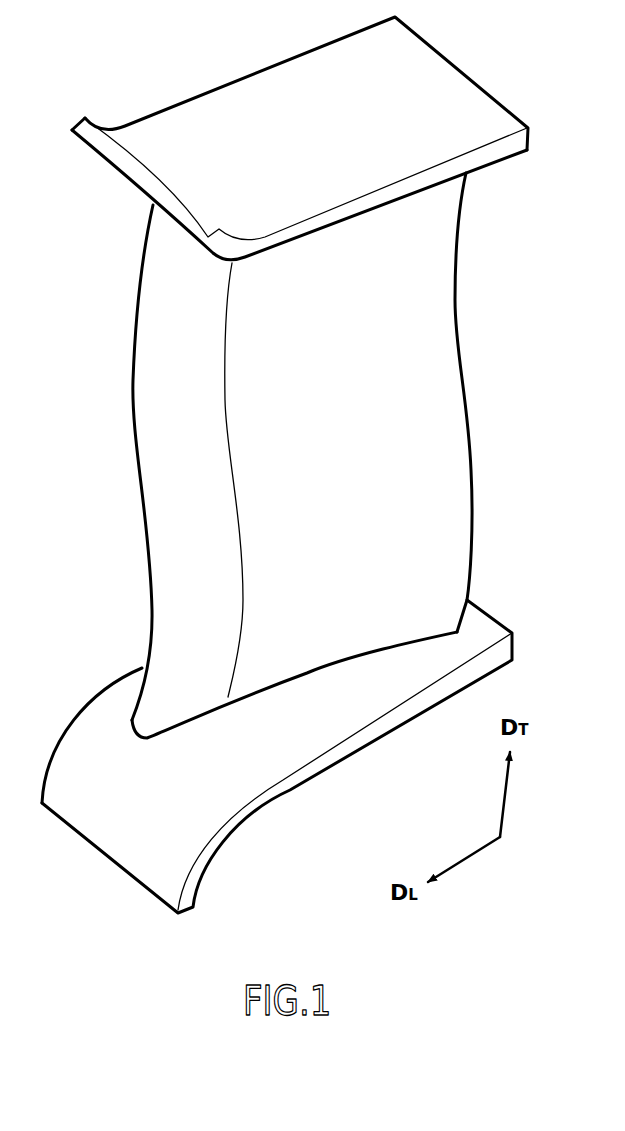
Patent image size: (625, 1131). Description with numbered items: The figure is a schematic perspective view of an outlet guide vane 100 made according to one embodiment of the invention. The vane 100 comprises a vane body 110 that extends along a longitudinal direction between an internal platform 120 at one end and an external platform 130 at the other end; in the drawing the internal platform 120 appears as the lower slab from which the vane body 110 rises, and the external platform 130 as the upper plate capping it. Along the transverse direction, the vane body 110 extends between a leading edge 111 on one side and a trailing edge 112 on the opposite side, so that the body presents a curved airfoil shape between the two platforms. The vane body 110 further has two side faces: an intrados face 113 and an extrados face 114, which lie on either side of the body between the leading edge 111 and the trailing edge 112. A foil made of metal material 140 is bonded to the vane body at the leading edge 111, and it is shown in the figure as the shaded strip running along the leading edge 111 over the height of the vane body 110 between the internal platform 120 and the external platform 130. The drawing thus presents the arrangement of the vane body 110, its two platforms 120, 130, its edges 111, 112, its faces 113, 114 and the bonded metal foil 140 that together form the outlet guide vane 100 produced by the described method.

The vane 100 is at (79, 68).
The vane body 110 is at (443, 410).
The leading edge 111 is at (133, 489).
The trailing edge 112 is at (474, 350).
The intrados face 113 is at (419, 288).
The extrados face 114 is at (395, 493).
The internal platform 120 is at (257, 780).
The external platform 130 is at (500, 117).
The foil made of metal material 140 is at (144, 397).